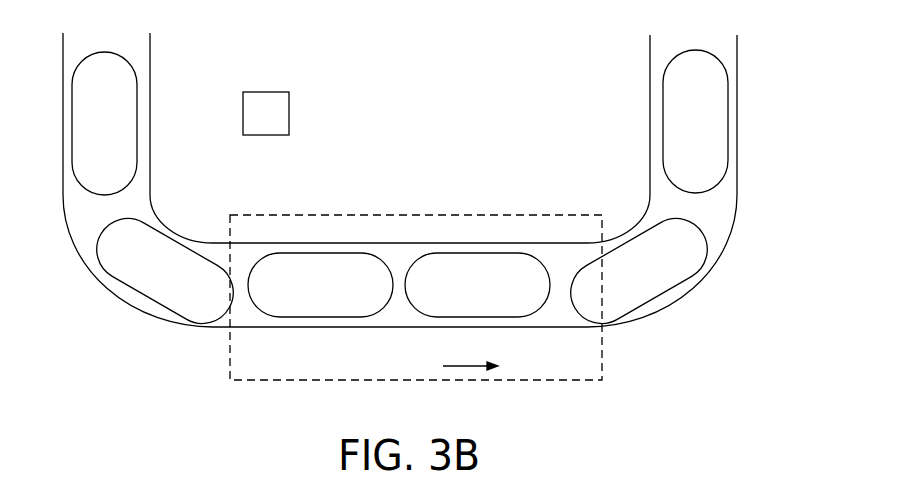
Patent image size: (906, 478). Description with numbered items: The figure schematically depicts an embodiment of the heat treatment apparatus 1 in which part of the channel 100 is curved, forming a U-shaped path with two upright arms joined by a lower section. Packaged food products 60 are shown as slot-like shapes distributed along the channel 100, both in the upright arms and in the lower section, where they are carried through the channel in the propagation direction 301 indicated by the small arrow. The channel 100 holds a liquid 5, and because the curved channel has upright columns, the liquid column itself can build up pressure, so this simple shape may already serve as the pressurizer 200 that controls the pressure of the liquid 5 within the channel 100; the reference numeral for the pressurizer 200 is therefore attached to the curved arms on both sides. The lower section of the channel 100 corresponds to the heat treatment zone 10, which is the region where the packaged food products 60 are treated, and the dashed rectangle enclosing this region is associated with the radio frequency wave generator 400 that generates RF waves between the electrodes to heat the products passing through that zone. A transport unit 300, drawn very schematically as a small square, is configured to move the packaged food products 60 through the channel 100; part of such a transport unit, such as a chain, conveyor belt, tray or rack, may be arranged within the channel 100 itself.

The composite structure 1 is at (408, 240).
The liquid 5 is at (558, 317).
The heat treatment zone 10 is at (400, 255).
The packaged food product 60 is at (662, 122).
The channel 100 is at (308, 343).
The pressurizer 200 is at (100, 307).
The transport unit 300 is at (302, 103).
The direction of orientation 301 is at (463, 367).
The radio frequency (RF) wave generator 400 is at (603, 383).